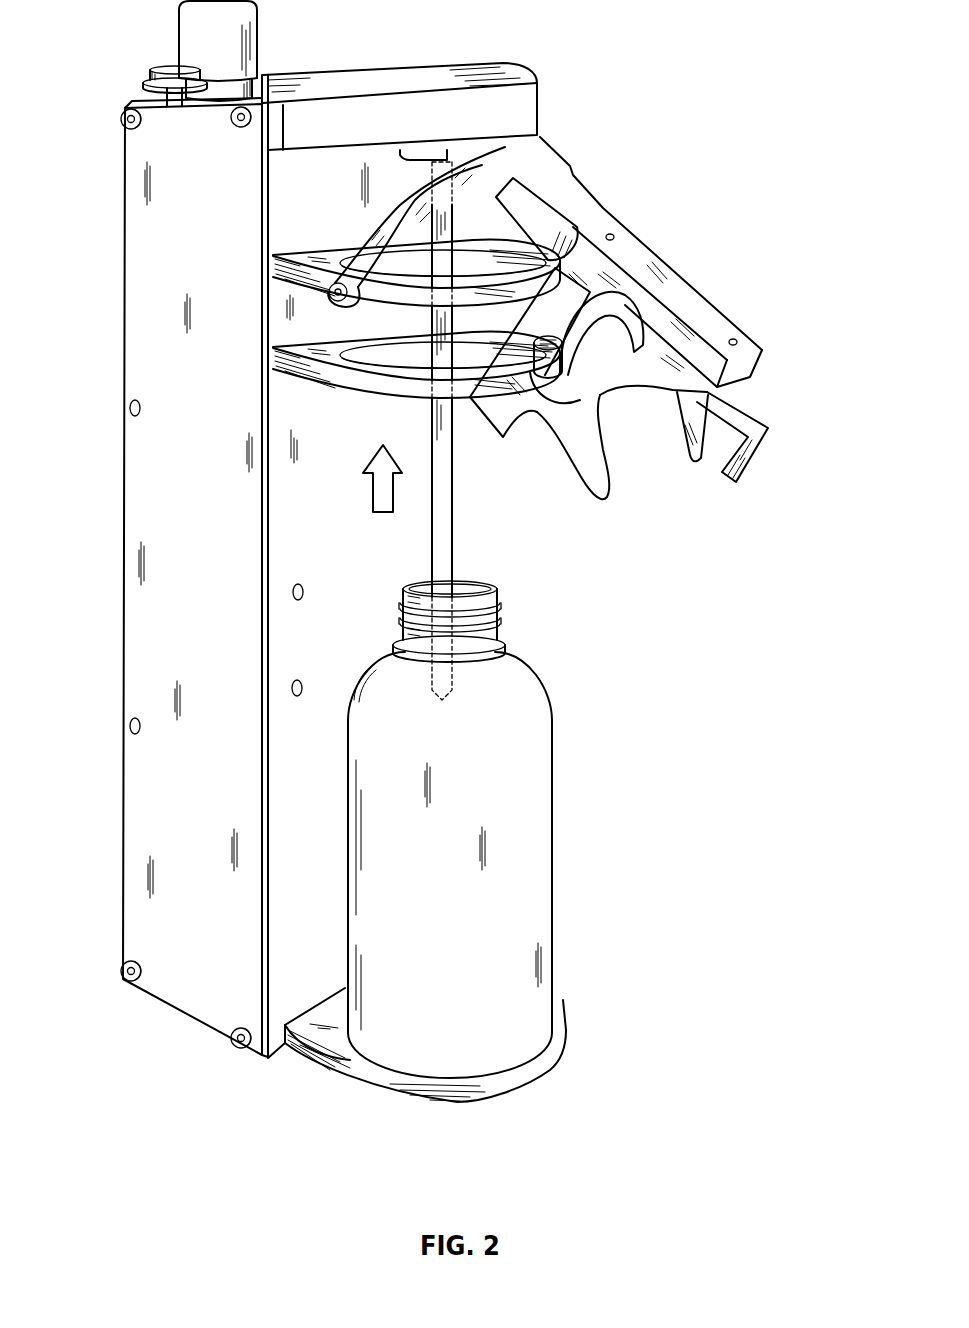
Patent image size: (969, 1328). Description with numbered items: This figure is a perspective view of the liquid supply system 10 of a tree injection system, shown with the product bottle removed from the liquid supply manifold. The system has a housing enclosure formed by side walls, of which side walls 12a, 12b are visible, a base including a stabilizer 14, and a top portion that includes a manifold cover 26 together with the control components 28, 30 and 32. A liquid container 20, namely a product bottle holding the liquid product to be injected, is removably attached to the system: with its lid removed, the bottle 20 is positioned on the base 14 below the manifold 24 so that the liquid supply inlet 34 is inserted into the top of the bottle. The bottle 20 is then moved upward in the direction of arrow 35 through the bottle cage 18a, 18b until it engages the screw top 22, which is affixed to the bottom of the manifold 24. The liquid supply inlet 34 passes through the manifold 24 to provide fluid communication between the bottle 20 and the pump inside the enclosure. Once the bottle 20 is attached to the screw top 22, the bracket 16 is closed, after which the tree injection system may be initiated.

The liquid supply system 10 is at (404, 561).
The side wall 12a is at (215, 532).
The side wall 12b is at (361, 607).
The stabilizer 14 is at (548, 1060).
The bracket 16 is at (703, 297).
The bottle cage 18a is at (267, 262).
The bottle cage 18b is at (267, 360).
The liquid container 20 is at (469, 990).
The screw top 22 is at (433, 153).
The manifold 24 is at (421, 137).
The manifold cover 26 is at (377, 83).
The control component 28 is at (150, 80).
The control component 30 is at (207, 33).
The control component 32 is at (263, 78).
The liquid supply inlet 34 is at (446, 470).
The arrow 35 is at (377, 493).